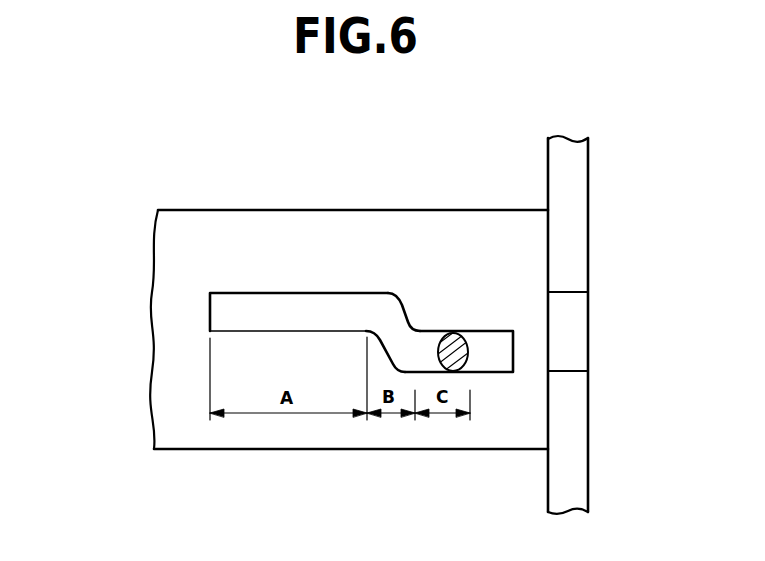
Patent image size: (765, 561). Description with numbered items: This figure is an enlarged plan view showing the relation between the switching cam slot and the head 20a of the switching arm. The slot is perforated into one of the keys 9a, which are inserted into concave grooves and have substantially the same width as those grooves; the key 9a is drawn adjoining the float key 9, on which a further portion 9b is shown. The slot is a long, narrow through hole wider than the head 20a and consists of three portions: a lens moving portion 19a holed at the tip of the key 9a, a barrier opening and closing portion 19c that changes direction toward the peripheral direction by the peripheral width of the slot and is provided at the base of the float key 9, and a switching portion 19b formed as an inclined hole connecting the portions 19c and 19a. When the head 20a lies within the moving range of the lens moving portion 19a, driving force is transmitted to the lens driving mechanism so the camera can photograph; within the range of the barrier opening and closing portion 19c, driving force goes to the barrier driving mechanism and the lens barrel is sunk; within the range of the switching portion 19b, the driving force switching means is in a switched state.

The float key 9 is at (588, 238).
The key 9a is at (230, 237).
The section of plate 9b is at (572, 337).
The lens moving portion 19a is at (228, 313).
The switching portion 19b is at (395, 335).
The barrier opening and closing portion 19c is at (490, 350).
The head 20a is at (460, 350).